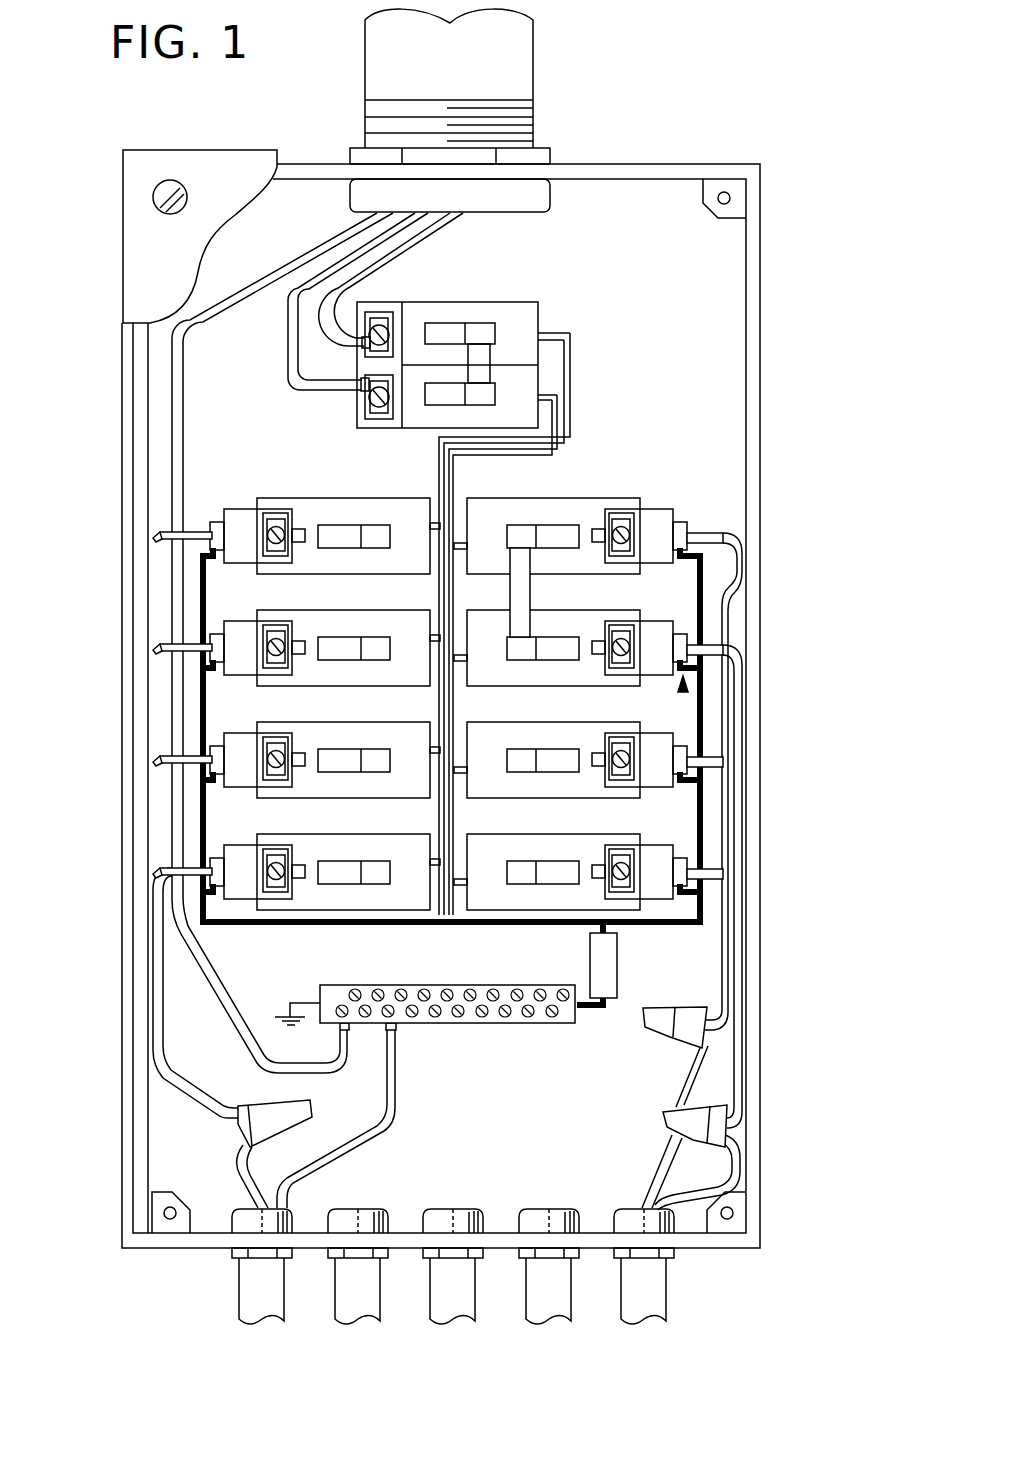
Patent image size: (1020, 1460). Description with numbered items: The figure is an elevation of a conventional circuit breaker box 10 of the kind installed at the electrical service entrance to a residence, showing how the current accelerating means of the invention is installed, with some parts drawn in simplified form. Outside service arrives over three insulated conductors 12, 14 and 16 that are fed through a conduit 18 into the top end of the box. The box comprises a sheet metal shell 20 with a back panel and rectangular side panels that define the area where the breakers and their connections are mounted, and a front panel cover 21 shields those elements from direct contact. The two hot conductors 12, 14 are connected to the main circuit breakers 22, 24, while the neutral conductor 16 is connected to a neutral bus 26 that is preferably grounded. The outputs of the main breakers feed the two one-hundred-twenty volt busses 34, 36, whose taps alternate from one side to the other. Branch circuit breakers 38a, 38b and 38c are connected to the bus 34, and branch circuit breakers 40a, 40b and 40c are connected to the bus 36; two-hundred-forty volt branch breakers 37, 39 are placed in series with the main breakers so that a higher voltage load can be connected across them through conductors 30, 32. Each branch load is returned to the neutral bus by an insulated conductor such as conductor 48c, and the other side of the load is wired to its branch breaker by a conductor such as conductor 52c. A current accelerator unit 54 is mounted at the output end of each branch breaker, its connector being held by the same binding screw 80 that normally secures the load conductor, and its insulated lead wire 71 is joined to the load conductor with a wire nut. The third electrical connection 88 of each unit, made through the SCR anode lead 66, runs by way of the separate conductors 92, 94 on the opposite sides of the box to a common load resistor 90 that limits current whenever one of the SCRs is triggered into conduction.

The circuit breaker box 10 is at (465, 638).
The conductor 12 is at (290, 343).
The conductor 14 is at (397, 268).
The neutral conductor 16 is at (311, 258).
The conduit 18 is at (535, 60).
The sheet metal shell 20 is at (758, 340).
The front panel cover 21 is at (210, 150).
The main circuit breaker 22 is at (558, 369).
The main circuit breaker 24 is at (510, 303).
The neutral bus 26 is at (393, 986).
The conductor 30 is at (737, 1175).
The conductor 32 is at (705, 1080).
The 120 volt bus 34 is at (438, 466).
The 120 volt bus 36 is at (457, 482).
The 240 volt branch circuit breaker 37 is at (560, 612).
The 120 volt branch circuit breaker 38a is at (338, 498).
The 120 volt branch circuit breaker 38b is at (338, 722).
The 120 volt branch circuit breaker 38c is at (520, 834).
The 240 volt branch circuit breaker 39 is at (560, 498).
The 120 volt branch circuit breaker 40a is at (338, 610).
The 120 volt branch circuit breaker 40b is at (520, 722).
The 120 volt branch circuit breaker 40c is at (338, 834).
The insulated conductor 48c is at (358, 1140).
The conductor 52c is at (243, 1188).
The current accelerator unit 54 is at (675, 508).
The anode lead 66 is at (690, 638).
The insulated lead wire 71 is at (742, 893).
The binding screw 80 is at (284, 1102).
The third electrical connection 88 is at (681, 692).
The load resistor 90 is at (617, 950).
The conductor 92 is at (197, 703).
The conductor 94 is at (744, 703).